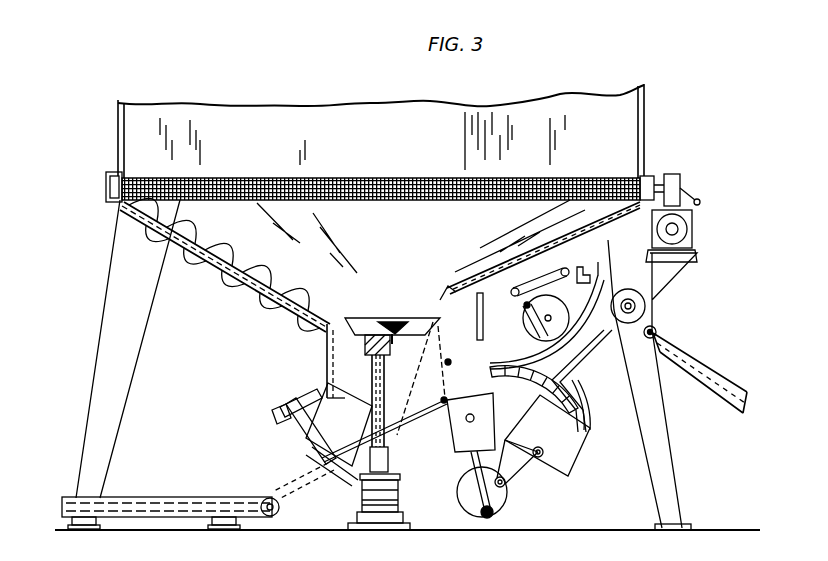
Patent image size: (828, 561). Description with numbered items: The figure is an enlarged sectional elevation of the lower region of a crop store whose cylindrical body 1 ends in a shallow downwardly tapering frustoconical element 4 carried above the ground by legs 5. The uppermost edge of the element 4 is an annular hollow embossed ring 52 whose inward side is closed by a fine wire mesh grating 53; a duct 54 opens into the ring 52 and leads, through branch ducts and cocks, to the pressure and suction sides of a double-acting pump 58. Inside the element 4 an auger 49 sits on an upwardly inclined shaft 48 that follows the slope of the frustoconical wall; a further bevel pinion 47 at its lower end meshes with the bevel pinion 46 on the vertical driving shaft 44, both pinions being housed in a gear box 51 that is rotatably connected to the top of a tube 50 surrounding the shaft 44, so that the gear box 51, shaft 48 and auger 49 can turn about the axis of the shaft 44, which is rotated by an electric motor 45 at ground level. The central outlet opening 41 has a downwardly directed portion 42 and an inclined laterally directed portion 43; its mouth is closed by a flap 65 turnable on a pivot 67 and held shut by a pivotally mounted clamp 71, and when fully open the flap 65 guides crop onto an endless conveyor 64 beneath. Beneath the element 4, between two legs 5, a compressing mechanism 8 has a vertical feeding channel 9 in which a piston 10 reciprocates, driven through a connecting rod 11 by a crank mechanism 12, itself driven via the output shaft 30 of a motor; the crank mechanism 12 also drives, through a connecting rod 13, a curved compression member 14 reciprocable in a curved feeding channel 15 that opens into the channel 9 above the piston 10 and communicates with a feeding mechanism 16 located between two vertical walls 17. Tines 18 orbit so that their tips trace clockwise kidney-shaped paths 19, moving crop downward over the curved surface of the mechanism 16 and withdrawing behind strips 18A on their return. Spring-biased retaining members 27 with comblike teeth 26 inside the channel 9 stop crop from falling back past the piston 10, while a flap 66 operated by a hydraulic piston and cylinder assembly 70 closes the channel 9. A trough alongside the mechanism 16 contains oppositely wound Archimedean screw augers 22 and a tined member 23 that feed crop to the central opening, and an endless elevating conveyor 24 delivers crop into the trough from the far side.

The cylindrical body 1 is at (266, 105).
The frustoconical element 4 is at (228, 268).
The legs 5 is at (120, 267).
The compressing mechanism 8 is at (565, 448).
The feeding channel 9 is at (483, 322).
The piston 10 is at (452, 432).
The connecting rod 11 is at (470, 455).
The crank mechanism 12 is at (492, 512).
The connecting rod 13 is at (505, 485).
The compression member 14 is at (535, 393).
The curved feeding channel 15 is at (563, 400).
The feeding mechanism 16 is at (577, 353).
The vertical walls 17 is at (608, 240).
The tines 18 is at (538, 325).
The strips 18A is at (561, 288).
The kidney-shaped paths 19 is at (598, 290).
The Archimedean screw augers 22 is at (640, 308).
The member 23 is at (655, 332).
The endless elevating conveyor 24 is at (722, 382).
The comblike teeth 26 is at (460, 370).
The retaining members 27 is at (453, 295).
The output shaft 30 is at (468, 505).
The outlet opening 41 is at (326, 355).
The downwardly directed portion 42 is at (327, 340).
The laterally directed portion 43 is at (320, 455).
The vertical driving shaft 44 is at (372, 388).
The electric motor 45 is at (392, 498).
The bevel pinion 46 is at (365, 350).
The further bevel pinion 47 is at (398, 330).
The upwardly inclined shaft 48 is at (382, 322).
The auger 49 is at (245, 240).
The tube 50 is at (338, 446).
The gear box 51 is at (398, 320).
The annular embossed ring 52 is at (110, 172).
The grating 53 is at (388, 160).
The duct 54 is at (660, 176).
The double-acting pump 58 is at (692, 240).
The endless conveyor 64 is at (170, 497).
The flap 65 is at (296, 430).
The flap 66 is at (442, 398).
The pivot 67 is at (303, 482).
The hydraulic piston and cylinder assembly 70 is at (352, 490).
The clamp 71 is at (305, 396).